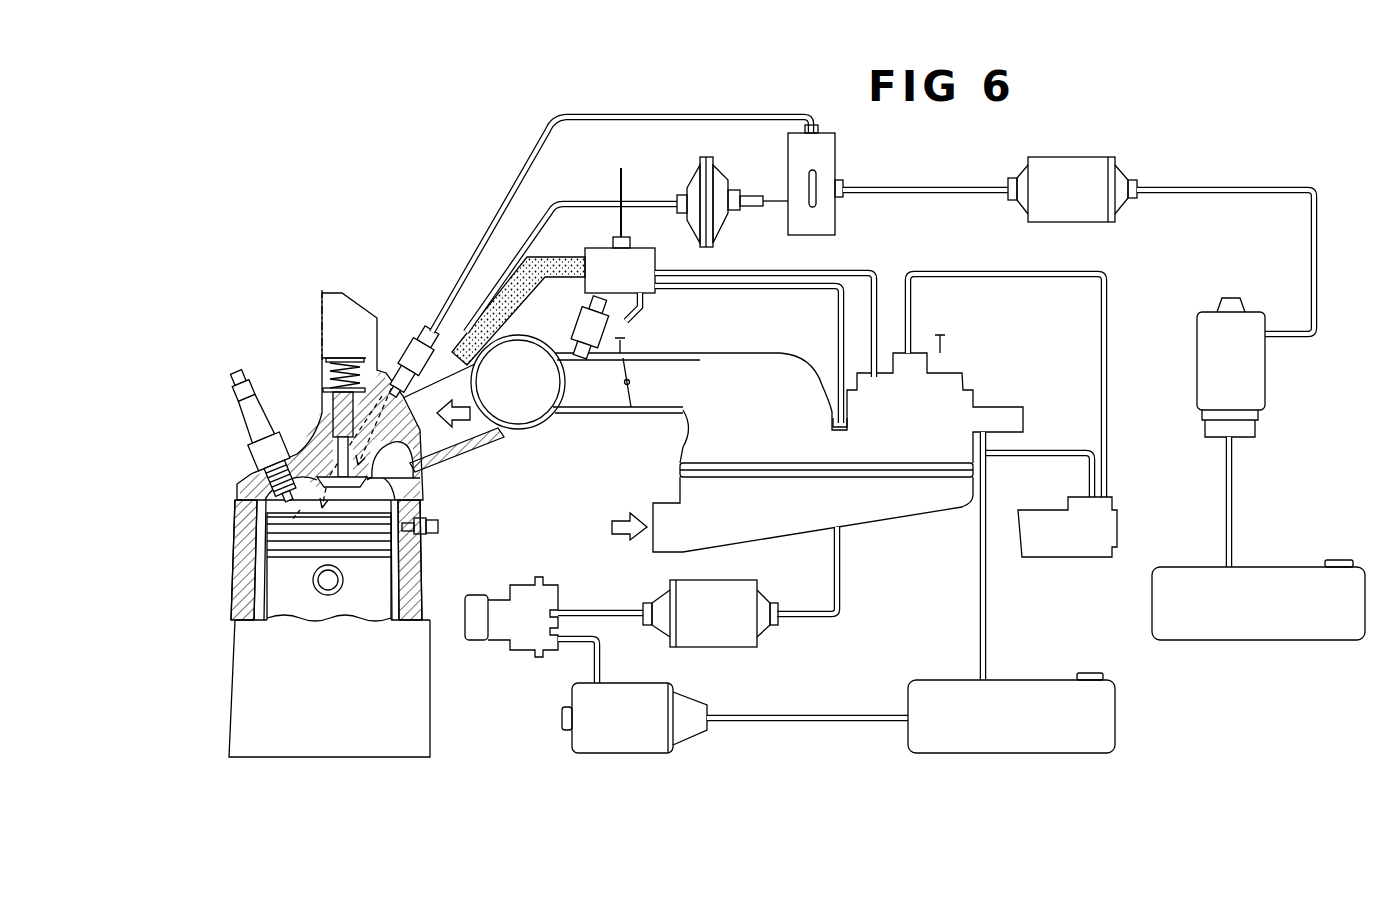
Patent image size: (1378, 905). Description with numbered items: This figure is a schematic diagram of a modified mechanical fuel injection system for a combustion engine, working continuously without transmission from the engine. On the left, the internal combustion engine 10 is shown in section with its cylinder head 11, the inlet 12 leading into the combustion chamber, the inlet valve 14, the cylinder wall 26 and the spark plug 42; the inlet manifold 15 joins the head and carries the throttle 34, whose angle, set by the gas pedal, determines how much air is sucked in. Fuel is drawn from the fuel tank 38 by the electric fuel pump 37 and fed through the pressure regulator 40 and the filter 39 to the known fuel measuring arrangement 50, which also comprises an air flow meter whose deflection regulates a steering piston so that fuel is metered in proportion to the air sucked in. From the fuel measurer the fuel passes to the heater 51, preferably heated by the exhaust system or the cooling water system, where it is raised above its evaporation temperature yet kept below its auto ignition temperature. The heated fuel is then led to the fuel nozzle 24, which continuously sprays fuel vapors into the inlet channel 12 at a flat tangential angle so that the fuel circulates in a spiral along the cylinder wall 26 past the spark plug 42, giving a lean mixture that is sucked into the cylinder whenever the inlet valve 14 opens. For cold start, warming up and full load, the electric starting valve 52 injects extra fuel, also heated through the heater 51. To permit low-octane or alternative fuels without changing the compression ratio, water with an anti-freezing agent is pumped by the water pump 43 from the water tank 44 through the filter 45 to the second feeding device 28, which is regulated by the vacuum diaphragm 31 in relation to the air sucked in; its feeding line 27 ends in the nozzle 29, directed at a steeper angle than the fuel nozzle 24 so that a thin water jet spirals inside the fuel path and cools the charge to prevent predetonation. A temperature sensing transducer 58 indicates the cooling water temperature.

The internal combustion engine 10 is at (248, 690).
The cylinder head 11 is at (240, 484).
The inlet to the combustion chamber 12 is at (372, 468).
The inlet valve 14 is at (356, 492).
The inlet manifold 15 is at (485, 426).
The fuel nozzle 24 is at (408, 446).
The cylinder wall 26 is at (278, 512).
The feeding line 27 is at (600, 121).
The second feeding device 28 is at (825, 163).
The nozzle 29 is at (420, 330).
The vacuum diaphragm 31 is at (690, 185).
The throttle 34 is at (626, 410).
The electric fuel pump 37 is at (627, 733).
The fuel tank 38 is at (1008, 730).
The filter 39 is at (724, 620).
The pressure regulator 40 is at (530, 625).
The spark plug 42 is at (256, 462).
The water pump 43 is at (1213, 367).
The water tank 44 is at (1227, 620).
The filter 45 is at (1092, 207).
The fuel measuring arrangement 50 is at (952, 403).
The heater 51 is at (637, 258).
The electric starting valve 52 is at (582, 334).
The temperature sensing transducer 58 is at (440, 530).